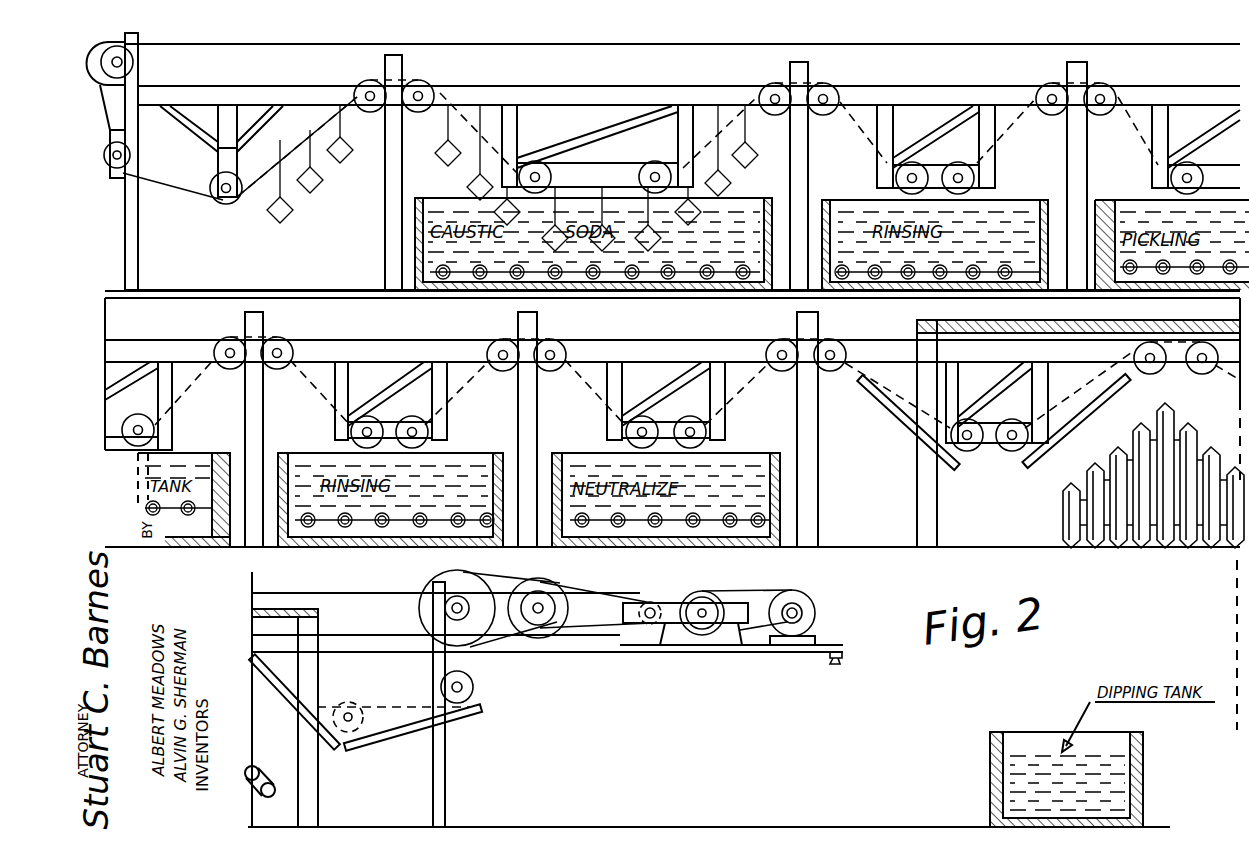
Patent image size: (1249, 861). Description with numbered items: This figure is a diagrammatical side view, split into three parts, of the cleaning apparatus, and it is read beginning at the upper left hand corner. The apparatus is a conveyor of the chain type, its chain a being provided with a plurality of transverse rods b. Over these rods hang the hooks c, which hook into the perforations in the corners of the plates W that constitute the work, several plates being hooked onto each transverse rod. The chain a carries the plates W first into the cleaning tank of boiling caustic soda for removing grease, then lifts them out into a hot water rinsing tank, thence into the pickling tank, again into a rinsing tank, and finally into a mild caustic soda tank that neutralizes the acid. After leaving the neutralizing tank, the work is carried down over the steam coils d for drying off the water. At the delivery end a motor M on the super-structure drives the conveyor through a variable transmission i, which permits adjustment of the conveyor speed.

The chain a is at (360, 593).
The transverse rod b is at (325, 160).
The hook c is at (767, 137).
The plates W is at (767, 173).
The steam coils d is at (1063, 500).
The variable transmission i is at (662, 602).
The motor M is at (805, 596).